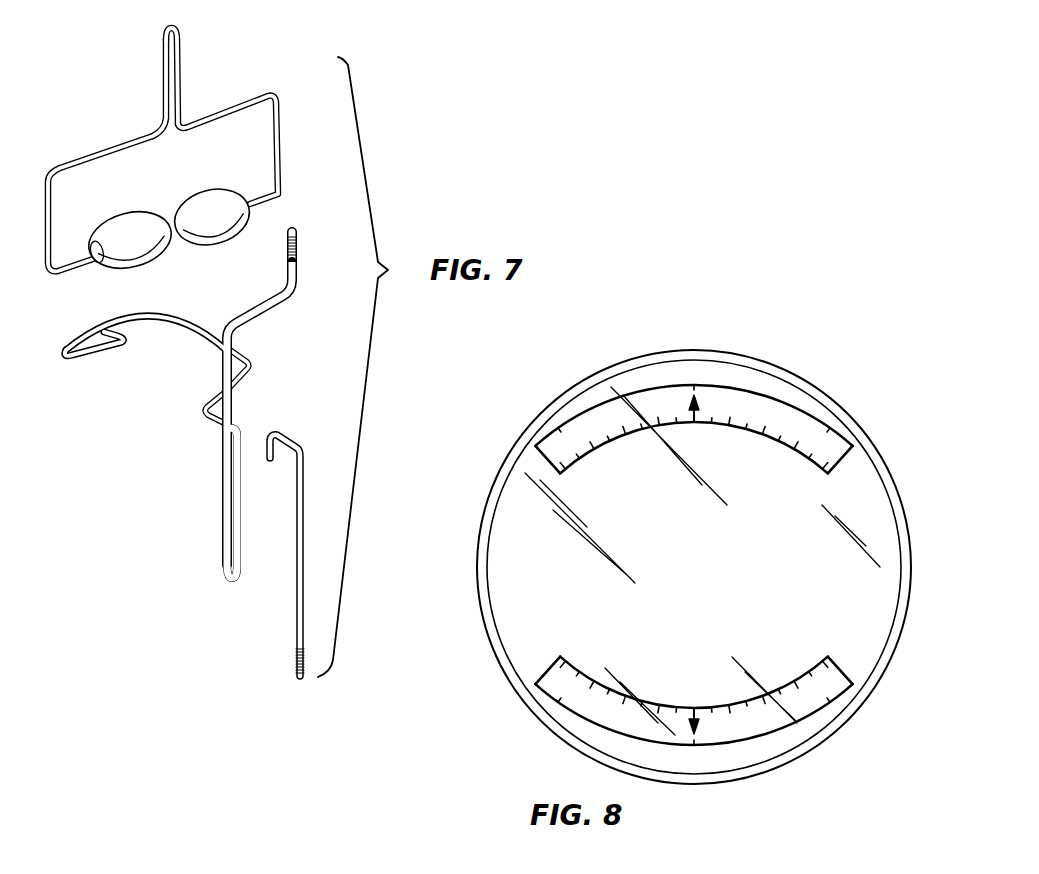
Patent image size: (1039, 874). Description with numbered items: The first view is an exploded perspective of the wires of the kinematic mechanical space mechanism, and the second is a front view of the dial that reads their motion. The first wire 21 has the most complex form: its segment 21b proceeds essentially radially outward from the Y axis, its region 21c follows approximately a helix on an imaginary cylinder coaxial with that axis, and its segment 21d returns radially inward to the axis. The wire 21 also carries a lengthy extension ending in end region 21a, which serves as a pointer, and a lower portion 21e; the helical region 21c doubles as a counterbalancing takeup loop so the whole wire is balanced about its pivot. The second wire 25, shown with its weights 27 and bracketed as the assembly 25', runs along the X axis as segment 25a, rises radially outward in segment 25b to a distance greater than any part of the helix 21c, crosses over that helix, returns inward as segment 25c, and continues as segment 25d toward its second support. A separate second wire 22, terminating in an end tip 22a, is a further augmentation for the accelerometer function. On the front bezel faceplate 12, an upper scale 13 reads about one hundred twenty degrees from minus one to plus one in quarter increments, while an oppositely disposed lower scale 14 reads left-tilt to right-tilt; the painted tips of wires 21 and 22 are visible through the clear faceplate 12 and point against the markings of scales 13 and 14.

In FIG. 8, the front bezel faceplate 12 is at (868, 658).
In FIG. 8, the upper scale 13 is at (854, 451).
In FIG. 8, the lower scale 14 is at (846, 700).
In FIG. 7, the first wire 21 is at (296, 238).
In FIG. 7, the end region of wire 21 21a is at (297, 249).
In FIG. 7, the segment 21b of wire 21 21b is at (208, 407).
In FIG. 7, the helix segment of wire 21 21c is at (152, 316).
In FIG. 7, the segment 21d of wire 21 21d is at (101, 348).
In FIG. 7, the doubled lower portion 21e is at (222, 503).
In FIG. 7, the second wire 22 is at (301, 503).
In FIG. 7, the hook wire lower end 22a is at (297, 672).
In FIG. 7, the wire 25 is at (122, 240).
In FIG. 7, the frame and weight assembly 25' is at (370, 367).
In FIG. 7, the wire segment 25a is at (112, 150).
In FIG. 7, the wire segment 25b is at (166, 79).
In FIG. 7, the frame spike right leg 25c is at (178, 80).
In FIG. 7, the wire segment 25d is at (261, 101).
In FIG. 7, the weights 27 is at (178, 203).